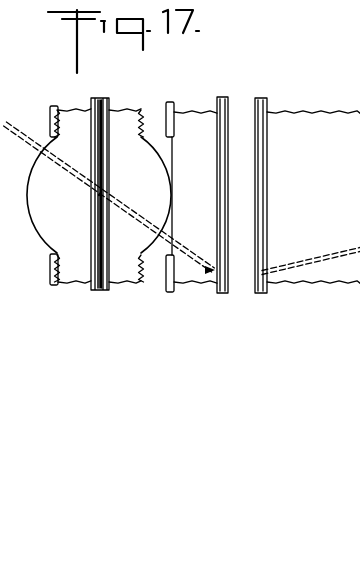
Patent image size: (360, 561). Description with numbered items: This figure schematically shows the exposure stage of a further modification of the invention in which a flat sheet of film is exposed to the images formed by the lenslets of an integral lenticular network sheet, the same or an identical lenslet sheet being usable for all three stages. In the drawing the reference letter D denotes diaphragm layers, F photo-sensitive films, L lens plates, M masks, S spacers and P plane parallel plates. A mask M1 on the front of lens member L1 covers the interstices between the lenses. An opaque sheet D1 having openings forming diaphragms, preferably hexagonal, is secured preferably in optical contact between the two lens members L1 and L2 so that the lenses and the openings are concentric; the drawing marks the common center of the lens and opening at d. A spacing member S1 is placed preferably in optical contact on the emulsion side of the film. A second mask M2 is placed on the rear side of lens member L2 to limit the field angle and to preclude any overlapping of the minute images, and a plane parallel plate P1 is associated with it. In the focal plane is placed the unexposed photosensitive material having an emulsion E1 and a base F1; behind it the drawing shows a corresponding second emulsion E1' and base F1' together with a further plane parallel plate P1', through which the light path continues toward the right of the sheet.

The mask M1 is at (42, 285).
The lens member L1 is at (80, 283).
The lens member L2 is at (131, 283).
The opaque sheet D1 is at (88, 284).
The spacing member S1 is at (105, 286).
The center point d is at (100, 195).
The second mask M2 is at (168, 292).
The plane parallel plate P1 is at (195, 303).
The emulsion E1 is at (207, 195).
The base F1 is at (221, 218).
The second electrode E1' is at (275, 195).
The second filter F1' is at (268, 214).
The second plate P1' is at (313, 301).